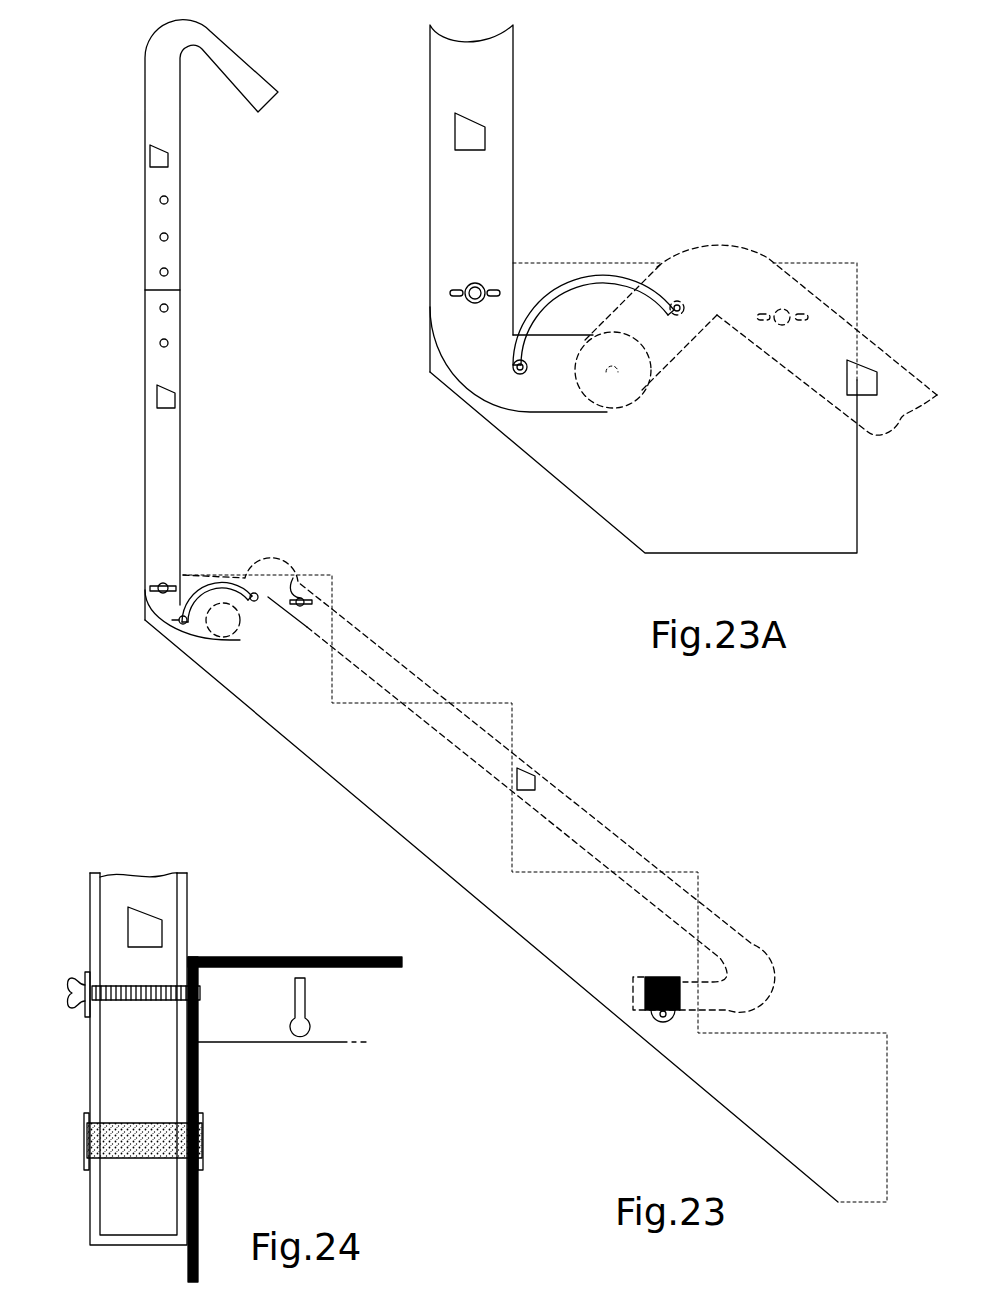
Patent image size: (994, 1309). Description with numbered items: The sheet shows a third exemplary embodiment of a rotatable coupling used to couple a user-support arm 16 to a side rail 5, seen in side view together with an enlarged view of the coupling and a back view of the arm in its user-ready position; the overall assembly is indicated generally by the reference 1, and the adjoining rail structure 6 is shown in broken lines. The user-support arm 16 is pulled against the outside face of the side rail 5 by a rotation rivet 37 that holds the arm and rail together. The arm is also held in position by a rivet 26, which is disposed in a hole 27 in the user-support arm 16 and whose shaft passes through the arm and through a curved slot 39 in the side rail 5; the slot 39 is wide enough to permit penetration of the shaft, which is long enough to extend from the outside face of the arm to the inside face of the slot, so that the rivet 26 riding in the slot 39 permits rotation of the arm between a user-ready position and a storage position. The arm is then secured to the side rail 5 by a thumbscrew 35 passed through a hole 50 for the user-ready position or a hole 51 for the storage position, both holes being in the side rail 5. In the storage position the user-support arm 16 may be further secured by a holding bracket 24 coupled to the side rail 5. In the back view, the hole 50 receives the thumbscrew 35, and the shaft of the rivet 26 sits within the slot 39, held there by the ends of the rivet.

In FIG. 23, the stair railing assembly 1 is at (449, 663).
In FIG. 23A, the stair railing assembly 1 is at (684, 246).
In FIG. 23, the side rail 5 is at (516, 888).
In FIG. 23A, the side rail 5 is at (643, 408).
In FIG. 23, the handrail 6 is at (320, 573).
In FIG. 23A, the handrail 6 is at (636, 255).
In FIG. 24, the handrail 6 is at (350, 937).
In FIG. 23, the user-support arm 16 is at (187, 323).
In FIG. 23A, the user-support arm 16 is at (530, 108).
In FIG. 24, the user-support arm 16 is at (90, 938).
In FIG. 23, the holding bracket 24 is at (633, 1003).
In FIG. 23A, the rivet 26 is at (516, 369).
In FIG. 24, the rivet 26 is at (145, 1140).
In FIG. 23A, the hole 27 is at (527, 371).
In FIG. 23, the thumbscrew 35 is at (150, 586).
In FIG. 23A, the thumbscrew 35 is at (485, 275).
In FIG. 24, the thumbscrew 35 is at (72, 1000).
In FIG. 23, the rotation rivet 37 is at (225, 623).
In FIG. 23A, the rotation rivet 37 is at (612, 379).
In FIG. 23, the curved slot 39 is at (225, 580).
In FIG. 23A, the curved slot 39 is at (585, 282).
In FIG. 24, the curved slot 39 is at (193, 1150).
In FIG. 23, the hole 50 is at (163, 586).
In FIG. 23A, the hole 50 is at (453, 296).
In FIG. 24, the hole 50 is at (200, 988).
In FIG. 23, the hole 51 is at (298, 596).
In FIG. 23A, the hole 51 is at (765, 317).